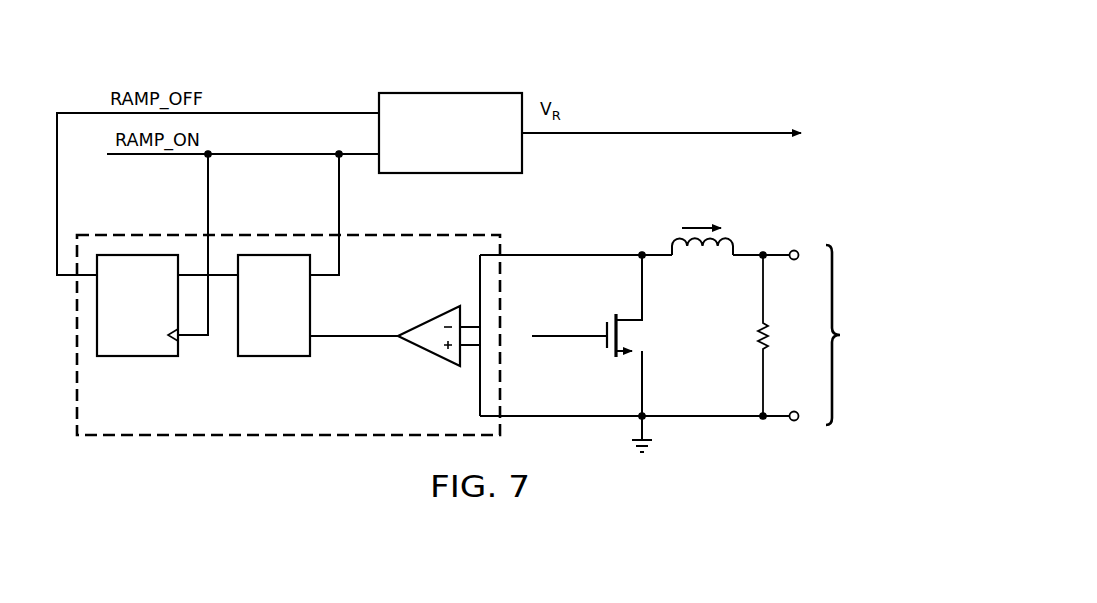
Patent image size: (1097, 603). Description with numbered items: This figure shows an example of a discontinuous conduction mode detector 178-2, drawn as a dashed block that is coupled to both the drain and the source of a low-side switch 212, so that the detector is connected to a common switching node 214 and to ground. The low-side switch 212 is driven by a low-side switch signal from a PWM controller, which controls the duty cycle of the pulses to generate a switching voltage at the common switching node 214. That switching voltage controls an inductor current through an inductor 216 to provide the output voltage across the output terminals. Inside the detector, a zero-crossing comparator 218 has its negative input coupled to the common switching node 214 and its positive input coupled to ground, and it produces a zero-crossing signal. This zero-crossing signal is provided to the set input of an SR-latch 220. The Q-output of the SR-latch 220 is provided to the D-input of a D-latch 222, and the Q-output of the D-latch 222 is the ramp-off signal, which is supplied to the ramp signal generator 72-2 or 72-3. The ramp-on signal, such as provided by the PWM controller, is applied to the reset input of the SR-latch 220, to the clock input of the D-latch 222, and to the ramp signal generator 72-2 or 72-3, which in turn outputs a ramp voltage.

The ramp signal generator 72-2 is at (450, 93).
The ramp signal generator 72-3 is at (448, 108).
The discontinuous conduction mode detector 178-2 is at (228, 438).
The D-latch 222 is at (137, 357).
The SR-latch 220 is at (276, 357).
The zero-crossing comparator 218 is at (431, 357).
The common switching node 214 is at (602, 212).
The inductor 216 is at (727, 240).
The low-side switch 212 is at (604, 344).